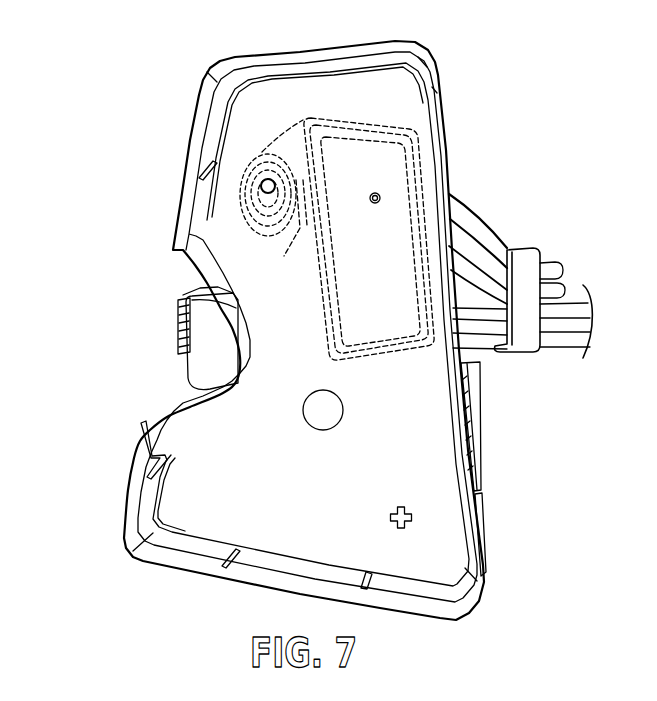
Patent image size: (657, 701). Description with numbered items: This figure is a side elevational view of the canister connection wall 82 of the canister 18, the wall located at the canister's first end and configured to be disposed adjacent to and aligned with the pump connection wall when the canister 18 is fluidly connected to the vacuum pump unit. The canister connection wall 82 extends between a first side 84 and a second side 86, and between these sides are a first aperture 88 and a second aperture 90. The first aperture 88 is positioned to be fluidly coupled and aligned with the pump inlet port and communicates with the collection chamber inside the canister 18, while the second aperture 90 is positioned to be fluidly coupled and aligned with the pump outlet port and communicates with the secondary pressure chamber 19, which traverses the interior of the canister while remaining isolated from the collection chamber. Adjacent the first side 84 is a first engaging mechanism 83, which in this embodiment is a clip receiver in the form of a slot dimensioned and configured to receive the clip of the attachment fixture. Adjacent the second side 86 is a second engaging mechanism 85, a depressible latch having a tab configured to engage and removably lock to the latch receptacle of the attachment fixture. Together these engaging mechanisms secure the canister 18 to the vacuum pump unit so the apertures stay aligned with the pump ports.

The canister 18 is at (176, 54).
The secondary pressure chamber 19 is at (283, 140).
The canister connection wall 82 is at (241, 513).
The first engaging mechanism 83 is at (474, 415).
The first side 84 is at (480, 508).
The second engaging mechanism 85 is at (203, 333).
The second side 86 is at (137, 458).
The first aperture 88 is at (381, 198).
The second aperture 90 is at (261, 188).